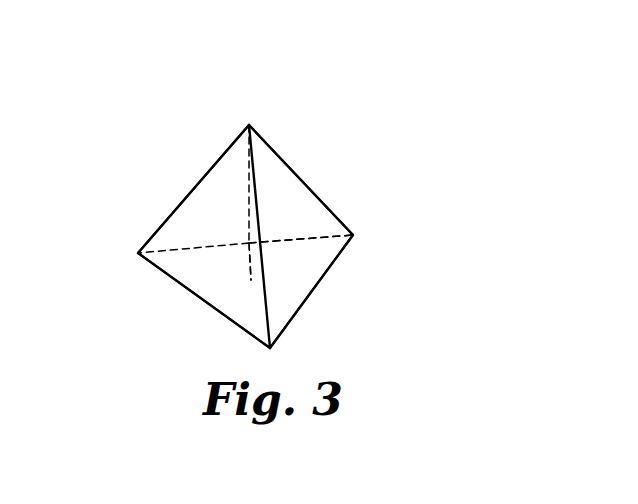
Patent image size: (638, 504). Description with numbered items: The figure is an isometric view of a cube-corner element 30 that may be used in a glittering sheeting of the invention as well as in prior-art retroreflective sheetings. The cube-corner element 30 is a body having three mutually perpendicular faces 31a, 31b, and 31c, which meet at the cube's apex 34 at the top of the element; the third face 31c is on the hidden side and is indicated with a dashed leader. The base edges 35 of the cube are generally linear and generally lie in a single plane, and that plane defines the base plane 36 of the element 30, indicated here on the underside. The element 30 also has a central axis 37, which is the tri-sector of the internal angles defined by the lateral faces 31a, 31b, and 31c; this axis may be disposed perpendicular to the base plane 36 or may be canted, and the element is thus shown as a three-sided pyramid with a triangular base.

The cube-corner element 30 is at (335, 91).
The face 31a is at (198, 198).
The face 31b is at (290, 188).
The face 31c is at (233, 160).
The apex 34 is at (249, 124).
The base edges 35 is at (173, 278).
The base plane 36 is at (233, 300).
The central axis 37 is at (249, 241).